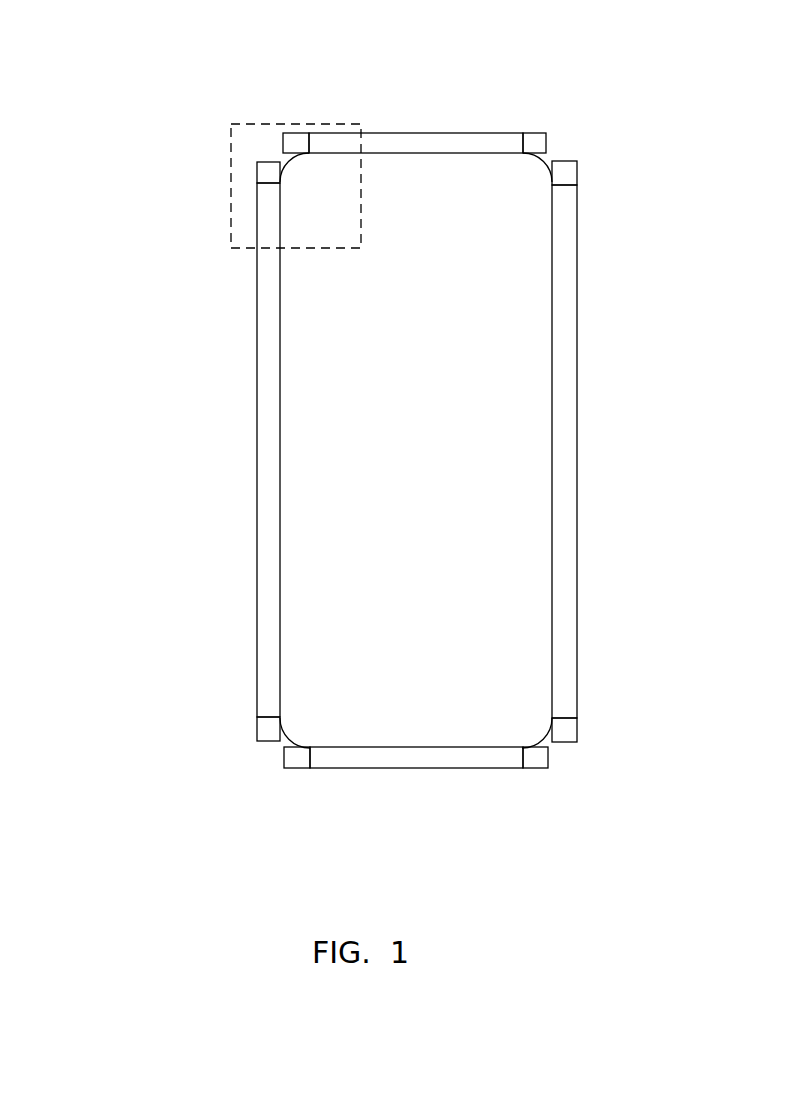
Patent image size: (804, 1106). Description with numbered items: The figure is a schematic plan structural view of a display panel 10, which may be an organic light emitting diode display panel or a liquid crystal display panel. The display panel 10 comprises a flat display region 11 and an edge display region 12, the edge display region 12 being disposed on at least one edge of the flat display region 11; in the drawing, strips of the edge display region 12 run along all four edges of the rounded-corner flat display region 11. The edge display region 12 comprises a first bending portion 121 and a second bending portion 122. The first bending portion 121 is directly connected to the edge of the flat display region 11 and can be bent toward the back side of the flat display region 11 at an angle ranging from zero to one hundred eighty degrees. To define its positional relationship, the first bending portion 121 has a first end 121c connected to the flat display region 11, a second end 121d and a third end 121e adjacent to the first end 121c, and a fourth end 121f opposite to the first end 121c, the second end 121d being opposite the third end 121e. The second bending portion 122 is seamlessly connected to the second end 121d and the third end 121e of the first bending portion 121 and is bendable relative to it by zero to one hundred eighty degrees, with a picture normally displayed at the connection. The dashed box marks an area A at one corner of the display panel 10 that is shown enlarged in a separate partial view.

The display panel 10 is at (455, 22).
The flat display region 11 is at (535, 187).
The edge display region 12 is at (105, 295).
The first bending portion 121 is at (393, 815).
The second bending portion 122 is at (620, 724).
The first end 121c is at (546, 324).
The second end 121d is at (566, 190).
The third end 121e is at (566, 708).
The fourth end 121f is at (583, 298).
The area A is at (370, 197).